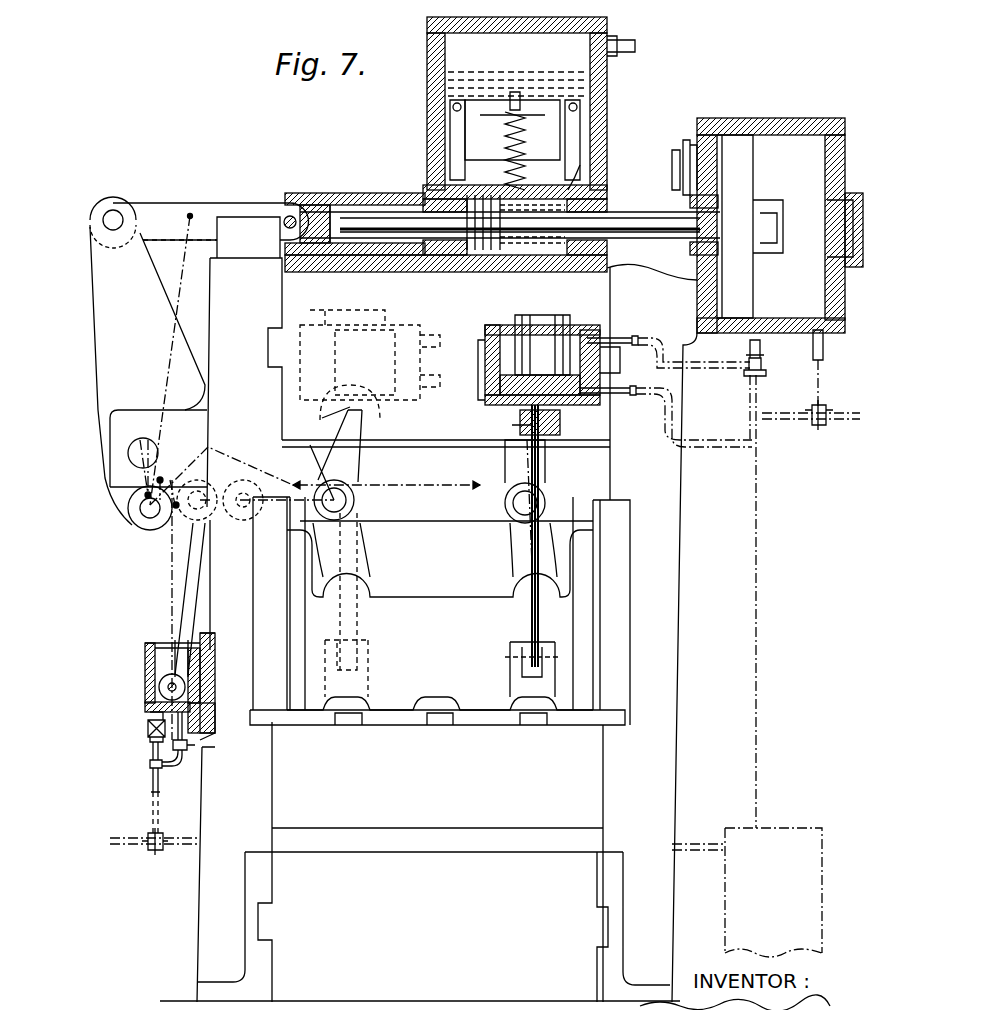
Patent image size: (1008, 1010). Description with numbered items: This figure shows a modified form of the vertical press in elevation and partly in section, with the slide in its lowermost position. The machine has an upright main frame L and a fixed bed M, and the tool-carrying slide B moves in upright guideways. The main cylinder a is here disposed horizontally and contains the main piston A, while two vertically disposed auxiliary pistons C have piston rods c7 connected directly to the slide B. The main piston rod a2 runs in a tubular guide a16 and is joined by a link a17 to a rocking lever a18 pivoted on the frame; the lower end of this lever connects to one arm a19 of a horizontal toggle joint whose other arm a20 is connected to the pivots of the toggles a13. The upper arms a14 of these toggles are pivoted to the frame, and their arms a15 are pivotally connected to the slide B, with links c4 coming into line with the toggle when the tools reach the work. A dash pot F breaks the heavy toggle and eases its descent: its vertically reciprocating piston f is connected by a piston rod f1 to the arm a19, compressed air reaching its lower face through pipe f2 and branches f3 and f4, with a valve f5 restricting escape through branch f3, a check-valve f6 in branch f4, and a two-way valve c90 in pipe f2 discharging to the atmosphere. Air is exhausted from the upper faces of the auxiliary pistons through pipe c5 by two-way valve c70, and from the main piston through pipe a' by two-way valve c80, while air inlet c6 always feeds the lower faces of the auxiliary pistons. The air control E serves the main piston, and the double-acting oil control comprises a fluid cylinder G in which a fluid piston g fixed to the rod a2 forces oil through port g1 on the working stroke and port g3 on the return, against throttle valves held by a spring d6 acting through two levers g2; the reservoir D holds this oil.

The main cylinder a is at (735, 215).
The main piston A is at (750, 226).
The pipe a' is at (824, 369).
The main piston rod a2 is at (510, 236).
The toggles a13 is at (350, 486).
The upper arms of the toggles a14 is at (515, 452).
The arms of the toggles a15 is at (515, 565).
The tubular guide a16 is at (345, 196).
The link a17 is at (205, 207).
The rocking lever a18 is at (148, 378).
The arm of the toggle joint a19 is at (188, 530).
The arm of the toggle joint a20 is at (316, 498).
The slide B is at (437, 611).
The auxiliary piston C is at (488, 352).
The links c4 is at (432, 521).
The compressed air pipe c5 is at (634, 338).
The air inlet c6 is at (636, 393).
The piston rods of the auxiliary pistons c7 is at (543, 488).
The two-way valve c70 is at (747, 648).
The two-way valve c80 is at (811, 422).
The two-way valve c90 is at (154, 852).
The reservoir D is at (445, 100).
The spring d6 is at (545, 138).
The air control E is at (686, 150).
The dash pot F is at (150, 672).
The piston of the dash pot f is at (165, 660).
The piston rod f1 is at (185, 565).
The pipe f2 is at (151, 788).
The branch pipe f3 is at (174, 770).
The branch pipe f4 is at (152, 755).
The valve f5 is at (205, 747).
The check-valve f6 is at (146, 727).
The fluid cylinder G is at (520, 260).
The fluid piston g is at (470, 210).
The port g1 is at (445, 178).
The levers g2 is at (460, 125).
The port g3 is at (585, 172).
The main frame L is at (428, 609).
The bed M is at (544, 927).